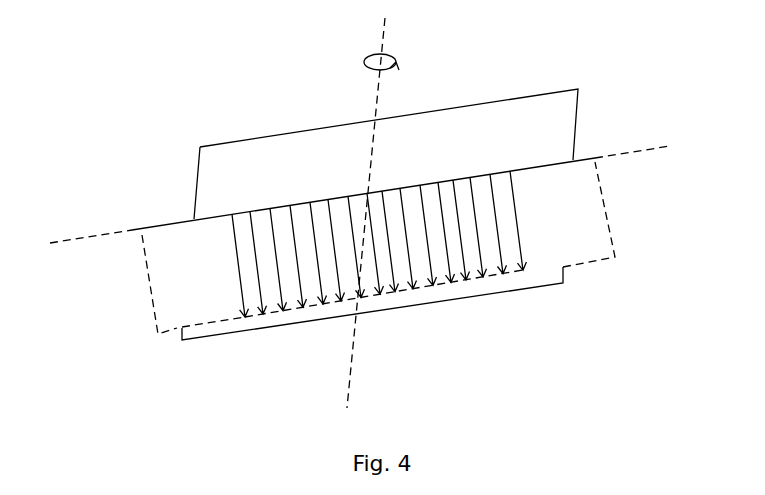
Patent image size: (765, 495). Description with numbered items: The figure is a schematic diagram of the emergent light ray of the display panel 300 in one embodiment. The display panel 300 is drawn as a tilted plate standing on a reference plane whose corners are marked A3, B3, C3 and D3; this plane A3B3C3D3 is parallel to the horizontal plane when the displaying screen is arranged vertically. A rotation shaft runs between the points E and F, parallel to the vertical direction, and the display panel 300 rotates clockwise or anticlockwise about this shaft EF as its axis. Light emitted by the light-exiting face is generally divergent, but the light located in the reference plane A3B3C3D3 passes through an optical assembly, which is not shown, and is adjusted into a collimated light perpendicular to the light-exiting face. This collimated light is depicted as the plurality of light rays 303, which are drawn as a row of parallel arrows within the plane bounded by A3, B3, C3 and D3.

The display panel 300 is at (467, 106).
The parallel light rays 303 is at (515, 208).
The rotation shaft end point E is at (373, 204).
The rotation shaft end point F is at (348, 425).
The reference plane corner point A3 is at (137, 215).
The reference plane corner point B3 is at (145, 348).
The reference plane corner point C3 is at (623, 273).
The reference plane corner point D3 is at (602, 144).